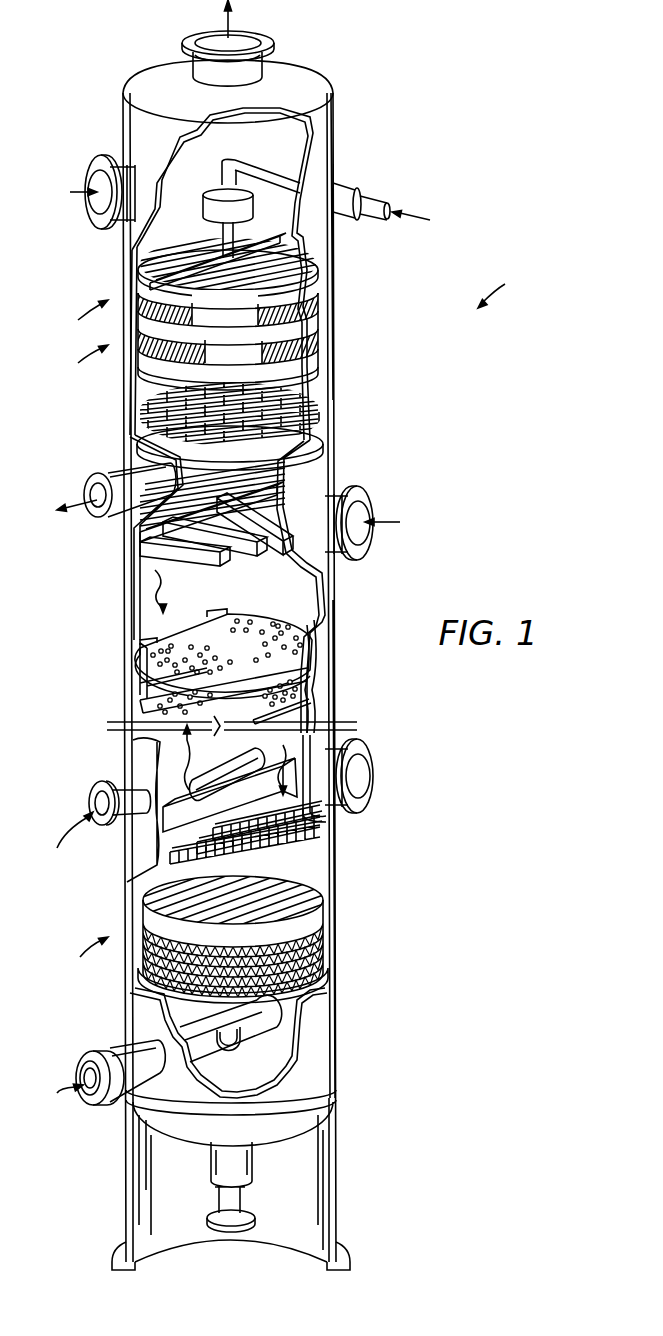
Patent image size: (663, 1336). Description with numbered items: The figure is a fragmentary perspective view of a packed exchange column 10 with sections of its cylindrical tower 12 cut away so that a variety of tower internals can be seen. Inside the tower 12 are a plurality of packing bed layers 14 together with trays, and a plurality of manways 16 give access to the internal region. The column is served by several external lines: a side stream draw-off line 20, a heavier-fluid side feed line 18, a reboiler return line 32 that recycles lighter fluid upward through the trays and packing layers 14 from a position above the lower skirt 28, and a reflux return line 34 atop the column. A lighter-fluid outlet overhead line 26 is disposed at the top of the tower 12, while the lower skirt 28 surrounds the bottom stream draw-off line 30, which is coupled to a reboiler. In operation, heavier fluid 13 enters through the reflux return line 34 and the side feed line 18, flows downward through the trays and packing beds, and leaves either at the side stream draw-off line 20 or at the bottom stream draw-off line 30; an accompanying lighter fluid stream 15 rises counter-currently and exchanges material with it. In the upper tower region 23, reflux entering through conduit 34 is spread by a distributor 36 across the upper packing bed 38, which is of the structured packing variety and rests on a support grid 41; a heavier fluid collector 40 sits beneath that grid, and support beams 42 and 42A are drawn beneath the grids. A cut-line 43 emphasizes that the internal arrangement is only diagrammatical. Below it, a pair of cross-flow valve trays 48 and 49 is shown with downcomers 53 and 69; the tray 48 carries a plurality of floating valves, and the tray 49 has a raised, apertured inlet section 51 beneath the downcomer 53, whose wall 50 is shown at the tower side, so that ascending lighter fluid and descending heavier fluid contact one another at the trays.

The exchange column 10 is at (505, 288).
The cylindrical tower 12 is at (335, 127).
The heavier fluid 13 is at (430, 218).
The packing bed layers 14 is at (330, 320).
The gas stream 15 is at (233, 18).
The manways 16 is at (95, 168).
The heavier-fluid side feed line 18 is at (107, 783).
The side stream draw-off line 20 is at (117, 473).
The upper tower region 23 is at (78, 360).
The overhead line 26 is at (190, 35).
The lower skirt 28 is at (333, 1212).
The bottom stream draw-off line 30 is at (253, 1157).
The reboiler return line 32 is at (115, 1045).
The reflux return line 34 is at (345, 188).
The distributor 36 is at (140, 262).
The upper packing bed 38 is at (174, 246).
The heavier fluid collector 40 is at (317, 418).
The support grid 41 is at (333, 367).
The support beam 42 is at (140, 545).
The support beam 42A is at (323, 838).
The cut-line 43 is at (353, 723).
The tray 48 is at (223, 646).
The tray 49 is at (240, 703).
The downcomer 50 is at (305, 630).
The raised inlet section 51 is at (140, 700).
The downcomer 53 is at (140, 673).
The downcomer 69 is at (293, 717).